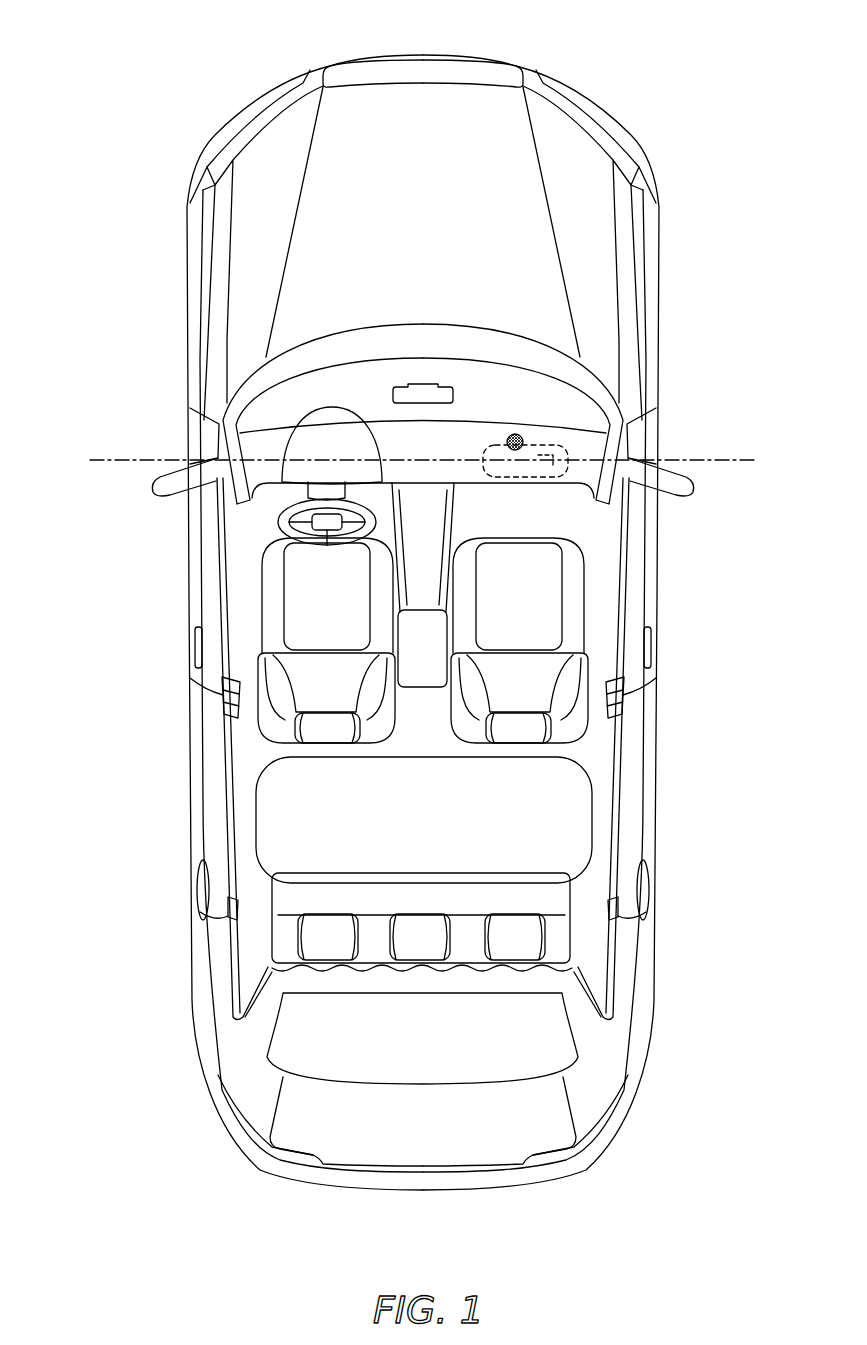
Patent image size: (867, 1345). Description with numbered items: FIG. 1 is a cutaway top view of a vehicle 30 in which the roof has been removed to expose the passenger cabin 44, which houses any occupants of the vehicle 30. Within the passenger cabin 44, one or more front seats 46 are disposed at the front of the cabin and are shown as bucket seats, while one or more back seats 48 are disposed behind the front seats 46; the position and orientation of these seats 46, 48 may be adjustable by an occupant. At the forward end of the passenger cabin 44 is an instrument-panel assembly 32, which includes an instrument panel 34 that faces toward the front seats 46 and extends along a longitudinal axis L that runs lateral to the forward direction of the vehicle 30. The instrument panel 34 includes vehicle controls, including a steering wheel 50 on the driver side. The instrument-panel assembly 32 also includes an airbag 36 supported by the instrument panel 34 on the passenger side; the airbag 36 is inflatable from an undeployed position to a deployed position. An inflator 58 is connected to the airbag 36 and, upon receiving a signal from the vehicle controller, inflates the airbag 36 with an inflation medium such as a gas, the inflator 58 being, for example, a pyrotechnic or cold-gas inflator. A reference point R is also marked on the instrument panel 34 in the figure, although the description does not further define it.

The vehicle 30 is at (132, 68).
The instrument-panel assembly 32 is at (687, 384).
The instrument panel 34 is at (590, 492).
The airbag 36 is at (568, 478).
The passenger cabin 44 is at (623, 782).
The front seats 46 is at (453, 601).
The back seats 48 is at (255, 820).
The steering wheel 50 is at (286, 538).
The inflator 58 is at (537, 456).
The reference point R is at (521, 436).
The longitudinal axis L is at (419, 463).